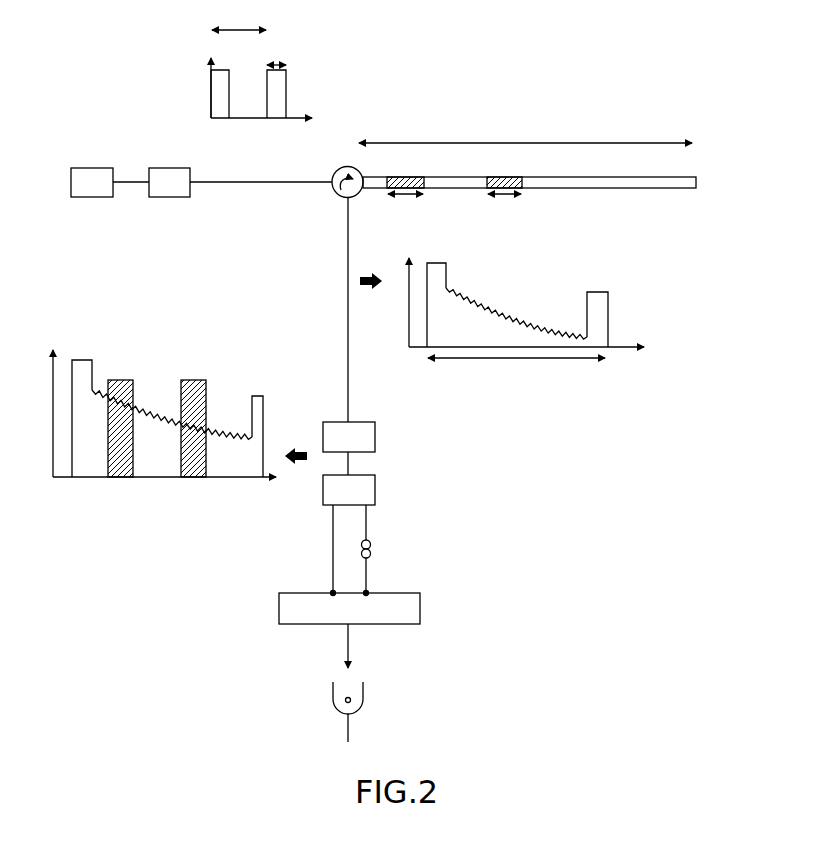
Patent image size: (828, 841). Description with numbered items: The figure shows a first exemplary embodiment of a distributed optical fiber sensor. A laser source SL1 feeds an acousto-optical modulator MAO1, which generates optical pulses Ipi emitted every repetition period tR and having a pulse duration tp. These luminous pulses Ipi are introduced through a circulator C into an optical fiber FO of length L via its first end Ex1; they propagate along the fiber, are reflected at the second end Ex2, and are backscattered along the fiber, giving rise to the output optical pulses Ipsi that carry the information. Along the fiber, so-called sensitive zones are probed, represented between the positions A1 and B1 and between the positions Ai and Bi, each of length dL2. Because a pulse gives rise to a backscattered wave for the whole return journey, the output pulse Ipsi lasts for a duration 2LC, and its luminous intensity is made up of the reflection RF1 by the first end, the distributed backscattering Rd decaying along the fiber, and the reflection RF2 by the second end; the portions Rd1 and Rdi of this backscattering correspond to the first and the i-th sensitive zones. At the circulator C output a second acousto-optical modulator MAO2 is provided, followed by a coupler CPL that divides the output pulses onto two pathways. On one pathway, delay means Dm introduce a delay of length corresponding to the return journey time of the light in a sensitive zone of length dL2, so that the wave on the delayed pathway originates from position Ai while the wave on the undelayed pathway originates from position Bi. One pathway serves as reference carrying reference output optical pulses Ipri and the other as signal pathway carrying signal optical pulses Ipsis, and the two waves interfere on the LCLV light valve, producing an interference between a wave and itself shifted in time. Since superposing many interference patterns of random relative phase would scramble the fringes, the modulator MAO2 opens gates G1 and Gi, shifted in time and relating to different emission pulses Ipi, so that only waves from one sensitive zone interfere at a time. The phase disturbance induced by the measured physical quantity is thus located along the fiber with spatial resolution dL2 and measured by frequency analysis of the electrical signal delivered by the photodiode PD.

The laser source SL1 is at (87, 168).
The acousto-optical modulator MAO1 is at (161, 168).
The circulator C is at (336, 192).
The first end Ex1 is at (365, 174).
The second end Ex2 is at (697, 180).
The optical fiber FO is at (651, 189).
The length of the optical fiber L is at (525, 128).
The position A1 is at (398, 169).
The position B1 is at (423, 164).
The position Ai is at (443, 374).
The position Bi is at (419, 374).
The sensitive zone length ΔL/2 dL2 is at (454, 210).
The optical pulses Ipi is at (279, 96).
The repetition period tR is at (239, 16).
The pulse duration tp is at (276, 52).
The output optical pulses Ipsi is at (336, 365).
The return journey duration 2L/c 2LC is at (516, 372).
The reflection by the first end RF1 is at (440, 261).
The reflection by the second end RF2 is at (603, 292).
The backscattering Rd is at (505, 315).
The backscattering from the first sensitive zone Rd1 is at (129, 406).
The backscattering from the i-th sensitive zone Rdi is at (203, 420).
The first gate G1 is at (121, 446).
The i-th gate Gi is at (193, 446).
The second acousto-optical modulator MAO2 is at (376, 427).
The coupler CPL is at (376, 484).
The signal optical pulses Ipsis is at (331, 524).
The reference output optical pulses Ipri is at (367, 517).
The delay means Dm is at (372, 550).
The LCLV light valve LCLV is at (421, 607).
The photodiode PD is at (366, 694).